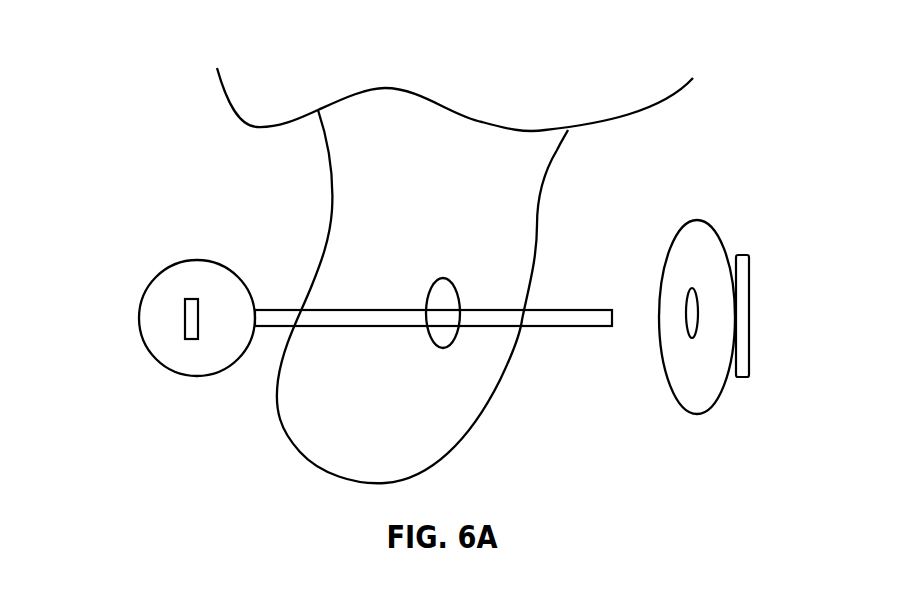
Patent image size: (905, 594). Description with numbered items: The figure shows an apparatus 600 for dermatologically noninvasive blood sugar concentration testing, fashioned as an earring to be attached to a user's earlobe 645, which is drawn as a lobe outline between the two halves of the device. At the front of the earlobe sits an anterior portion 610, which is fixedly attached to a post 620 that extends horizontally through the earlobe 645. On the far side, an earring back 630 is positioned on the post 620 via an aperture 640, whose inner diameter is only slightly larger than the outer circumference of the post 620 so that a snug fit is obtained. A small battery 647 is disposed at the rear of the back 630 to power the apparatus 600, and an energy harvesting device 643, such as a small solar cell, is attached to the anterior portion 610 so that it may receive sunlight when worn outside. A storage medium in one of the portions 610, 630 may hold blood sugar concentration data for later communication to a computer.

The apparatus 600 is at (124, 55).
The anterior portion 610 is at (139, 320).
The post 620 is at (552, 328).
The earring back 630 is at (720, 235).
The aperture 640 is at (687, 300).
The energy harvesting device 643 is at (185, 325).
The tissue 645 is at (279, 411).
The battery 647 is at (750, 316).